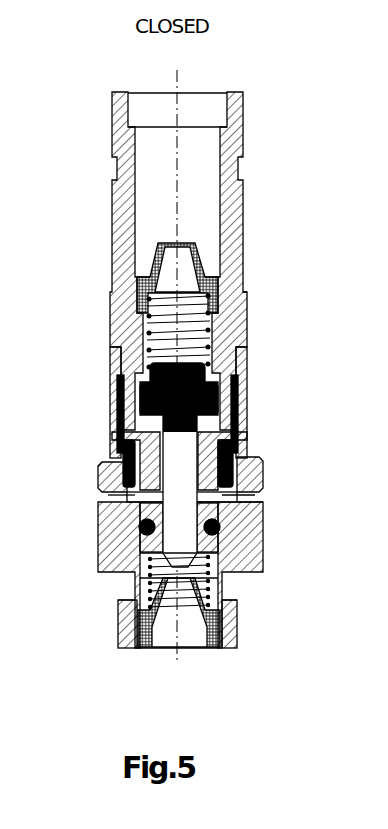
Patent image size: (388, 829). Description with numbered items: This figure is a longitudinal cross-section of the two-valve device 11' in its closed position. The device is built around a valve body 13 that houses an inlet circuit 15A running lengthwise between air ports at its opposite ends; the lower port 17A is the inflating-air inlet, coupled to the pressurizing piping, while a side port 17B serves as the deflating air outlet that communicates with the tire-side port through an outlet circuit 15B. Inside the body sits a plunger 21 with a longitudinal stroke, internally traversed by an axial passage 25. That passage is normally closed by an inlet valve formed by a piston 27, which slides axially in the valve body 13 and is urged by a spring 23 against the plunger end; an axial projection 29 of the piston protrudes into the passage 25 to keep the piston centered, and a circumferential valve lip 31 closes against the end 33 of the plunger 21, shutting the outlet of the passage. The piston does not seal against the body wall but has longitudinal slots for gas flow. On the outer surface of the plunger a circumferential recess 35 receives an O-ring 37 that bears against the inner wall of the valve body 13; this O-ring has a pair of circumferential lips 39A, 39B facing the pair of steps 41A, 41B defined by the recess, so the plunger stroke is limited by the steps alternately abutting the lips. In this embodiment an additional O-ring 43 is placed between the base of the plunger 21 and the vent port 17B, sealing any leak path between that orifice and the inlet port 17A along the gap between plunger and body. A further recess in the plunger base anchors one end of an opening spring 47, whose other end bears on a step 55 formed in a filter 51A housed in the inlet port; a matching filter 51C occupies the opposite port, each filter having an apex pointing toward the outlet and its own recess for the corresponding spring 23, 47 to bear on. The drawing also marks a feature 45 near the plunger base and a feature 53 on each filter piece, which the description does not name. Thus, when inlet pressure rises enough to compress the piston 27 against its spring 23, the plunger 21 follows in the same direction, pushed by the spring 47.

The two-valve device 11' is at (165, 372).
The valve body 13 is at (124, 221).
The inlet circuit 15A is at (128, 597).
The outlet circuit 15B is at (250, 412).
The air port 17A is at (165, 645).
The port 17B is at (245, 497).
The plunger 21 is at (100, 518).
The spring 23 is at (140, 334).
The axial passage 25 is at (262, 558).
The piston 27 is at (138, 392).
The axial projection 29 is at (262, 525).
The valve lip 31 is at (136, 423).
The end of plunger 33 is at (247, 423).
The circumferential recess 35 is at (260, 510).
The O-ring 37 is at (126, 466).
The circumferential lip 39A is at (262, 468).
The circumferential lip 39B is at (242, 440).
The step 41A is at (112, 498).
The step 41B is at (120, 440).
The O-ring 43 is at (140, 532).
The cavity 45 is at (252, 575).
The opening spring 47 is at (138, 580).
The filter 51A is at (125, 625).
The filter 51C is at (138, 262).
The nozzle insert 53 is at (243, 240).
The step 55 is at (247, 293).